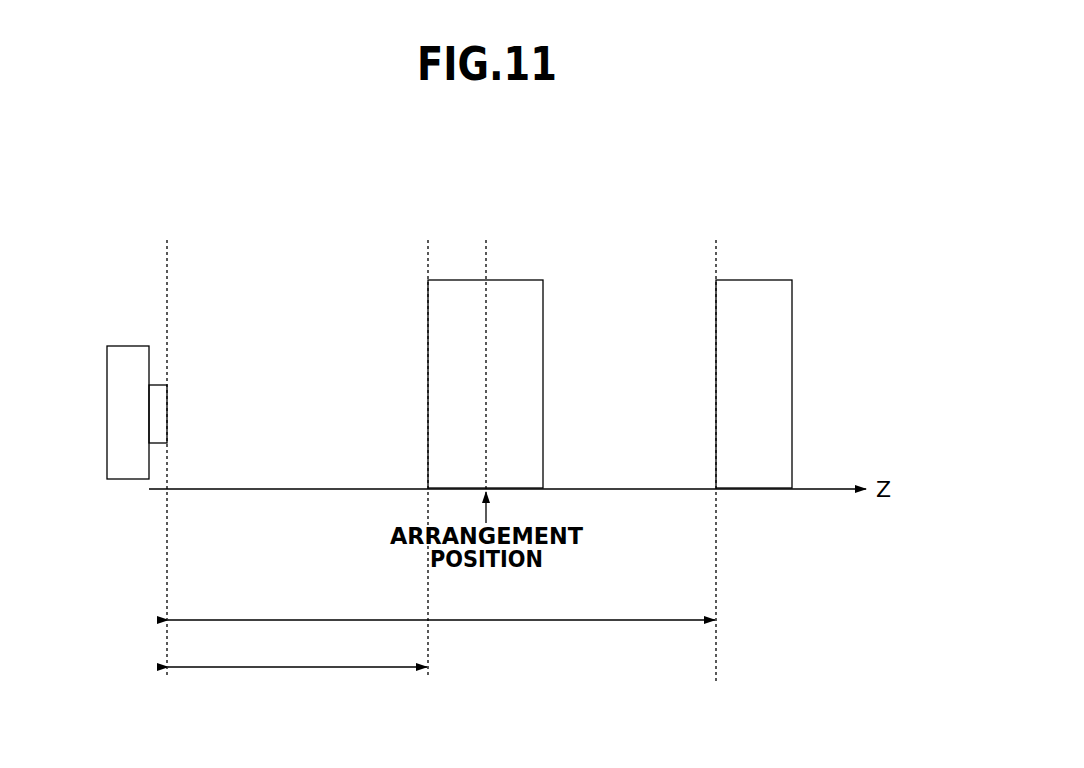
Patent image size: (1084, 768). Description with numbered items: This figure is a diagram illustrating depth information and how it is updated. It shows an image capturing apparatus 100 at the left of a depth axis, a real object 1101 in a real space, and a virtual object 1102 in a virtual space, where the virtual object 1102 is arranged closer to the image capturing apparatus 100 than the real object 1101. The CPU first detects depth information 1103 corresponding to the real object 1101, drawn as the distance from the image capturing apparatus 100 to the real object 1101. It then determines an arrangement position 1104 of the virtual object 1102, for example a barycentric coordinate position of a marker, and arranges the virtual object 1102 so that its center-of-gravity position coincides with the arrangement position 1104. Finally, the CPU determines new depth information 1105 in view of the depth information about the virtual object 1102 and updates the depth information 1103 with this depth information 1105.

The image capturing apparatus 100 is at (126, 346).
The real object 1101 is at (760, 280).
The virtual object 1102 is at (543, 279).
The depth information 1103 is at (302, 619).
The arrangement position 1104 is at (488, 240).
The depth information 1105 is at (303, 669).